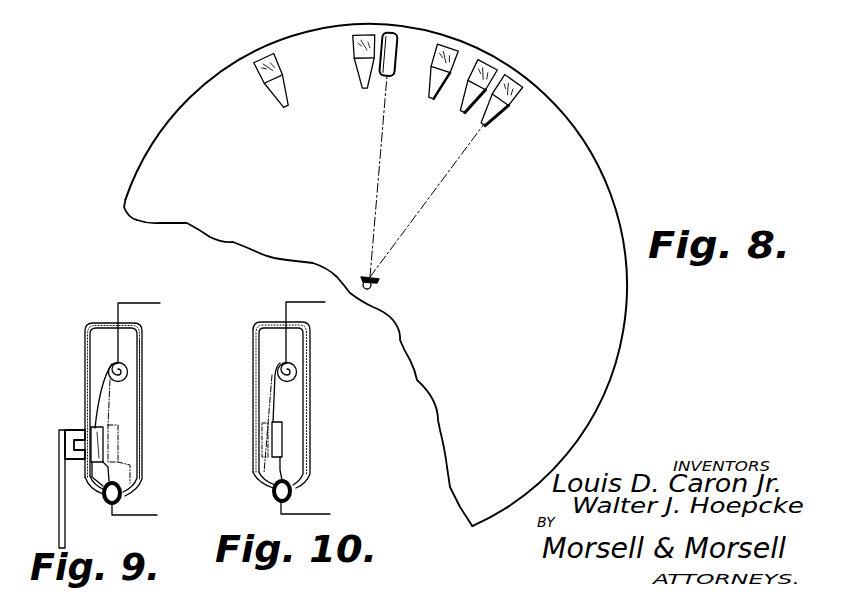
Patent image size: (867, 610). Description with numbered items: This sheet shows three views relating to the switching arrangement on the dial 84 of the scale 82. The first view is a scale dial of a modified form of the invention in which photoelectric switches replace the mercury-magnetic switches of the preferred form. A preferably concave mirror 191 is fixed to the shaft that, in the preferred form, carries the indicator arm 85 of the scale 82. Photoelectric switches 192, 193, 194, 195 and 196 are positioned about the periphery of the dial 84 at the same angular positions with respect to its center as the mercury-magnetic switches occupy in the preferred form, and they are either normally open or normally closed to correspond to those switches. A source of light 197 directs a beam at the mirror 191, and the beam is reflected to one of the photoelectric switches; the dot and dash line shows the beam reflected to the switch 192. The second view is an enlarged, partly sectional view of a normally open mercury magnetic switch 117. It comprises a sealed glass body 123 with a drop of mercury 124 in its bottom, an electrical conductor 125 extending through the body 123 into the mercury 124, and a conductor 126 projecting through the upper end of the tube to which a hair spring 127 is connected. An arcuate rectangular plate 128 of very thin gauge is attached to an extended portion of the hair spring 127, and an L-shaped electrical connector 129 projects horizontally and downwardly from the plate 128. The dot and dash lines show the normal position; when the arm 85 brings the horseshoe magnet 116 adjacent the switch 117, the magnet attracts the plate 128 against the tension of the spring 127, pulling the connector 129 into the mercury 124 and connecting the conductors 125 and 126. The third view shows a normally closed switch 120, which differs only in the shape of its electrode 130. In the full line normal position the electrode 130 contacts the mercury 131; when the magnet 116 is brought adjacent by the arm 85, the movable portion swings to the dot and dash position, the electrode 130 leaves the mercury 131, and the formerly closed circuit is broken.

In FIG. 8, the scale 82 is at (580, 134).
In FIG. 8, the dial 84 is at (578, 200).
In FIG. 9, the indicator arm 85 is at (59, 488).
In FIG. 9, the horseshoe magnet 116 is at (68, 427).
In FIG. 9, the mercury magnetic switch 117 is at (86, 347).
In FIG. 10, the mercury magnetic switch 120 is at (310, 363).
In FIG. 9, the sealed glass body 123 is at (142, 459).
In FIG. 9, the drop of mercury 124 is at (123, 495).
In FIG. 9, the electrical conductor 125 is at (111, 513).
In FIG. 9, the electrical conductor 126 is at (118, 311).
In FIG. 9, the hair spring 127 is at (138, 372).
In FIG. 9, the arcuate rectangular plate 128 is at (88, 427).
In FIG. 9, the L-shaped electrical connector 129 is at (98, 485).
In FIG. 10, the electrode 130 is at (281, 470).
In FIG. 10, the mercury 131 is at (293, 491).
In FIG. 8, the concave mirror 191 is at (376, 280).
In FIG. 8, the photoelectric switch 192 is at (523, 82).
In FIG. 8, the photoelectric switch 193 is at (500, 66).
In FIG. 8, the photoelectric switch 194 is at (457, 46).
In FIG. 8, the photoelectric switch 195 is at (365, 34).
In FIG. 8, the photoelectric switch 196 is at (267, 60).
In FIG. 8, the source of light 197 is at (398, 34).